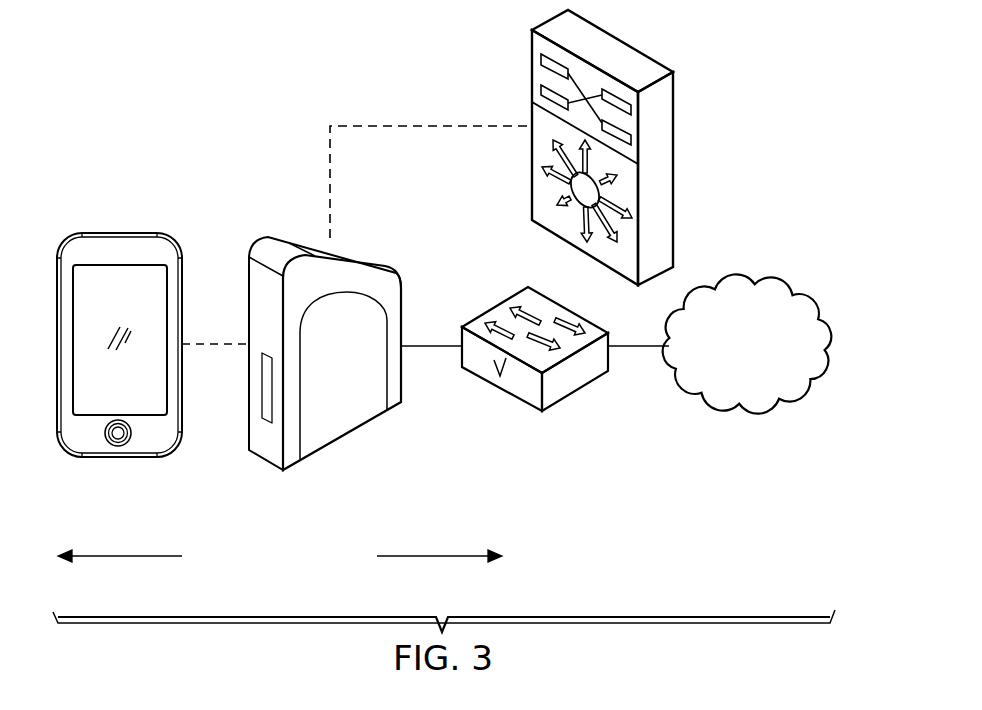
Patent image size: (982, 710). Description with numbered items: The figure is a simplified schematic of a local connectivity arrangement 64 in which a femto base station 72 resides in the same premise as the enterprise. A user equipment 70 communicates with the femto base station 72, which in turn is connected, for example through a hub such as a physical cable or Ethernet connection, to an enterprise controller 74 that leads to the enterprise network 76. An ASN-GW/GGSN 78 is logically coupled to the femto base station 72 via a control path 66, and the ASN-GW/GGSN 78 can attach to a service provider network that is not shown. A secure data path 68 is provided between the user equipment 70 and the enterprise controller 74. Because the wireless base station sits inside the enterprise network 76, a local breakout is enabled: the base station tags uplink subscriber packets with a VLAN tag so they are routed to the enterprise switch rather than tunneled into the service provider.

The local connectivity arrangement 64 is at (205, 146).
The control path 66 is at (432, 127).
The secure data path 68 is at (128, 558).
The user equipment 70 is at (117, 458).
The femto base station 72 is at (342, 437).
The enterprise controller 74 is at (573, 393).
The enterprise network 76 is at (777, 283).
The ASN-GW/GGSN 78 is at (675, 167).